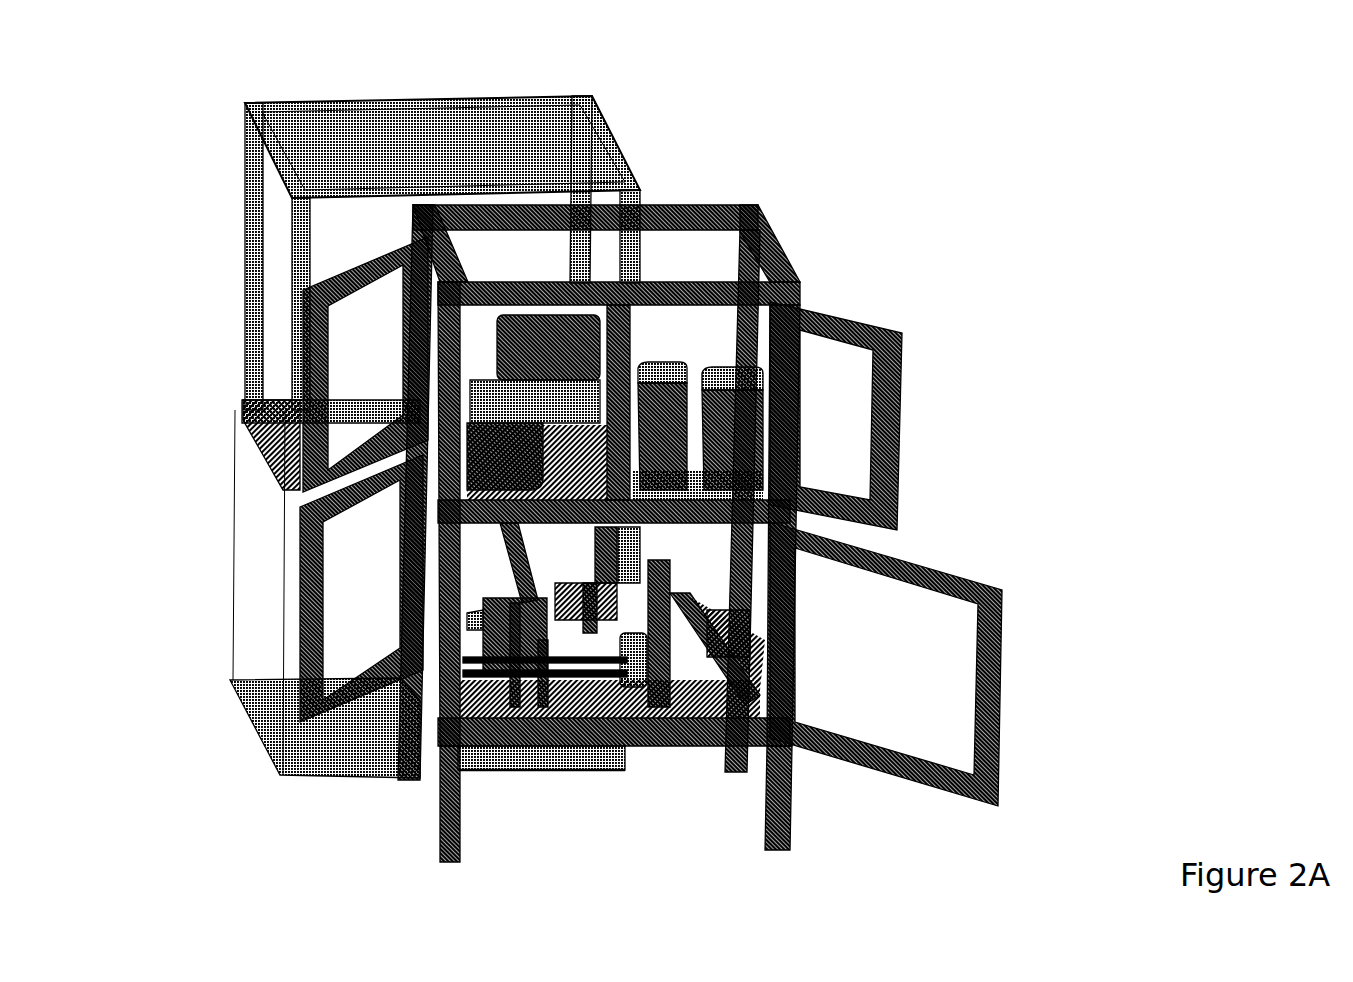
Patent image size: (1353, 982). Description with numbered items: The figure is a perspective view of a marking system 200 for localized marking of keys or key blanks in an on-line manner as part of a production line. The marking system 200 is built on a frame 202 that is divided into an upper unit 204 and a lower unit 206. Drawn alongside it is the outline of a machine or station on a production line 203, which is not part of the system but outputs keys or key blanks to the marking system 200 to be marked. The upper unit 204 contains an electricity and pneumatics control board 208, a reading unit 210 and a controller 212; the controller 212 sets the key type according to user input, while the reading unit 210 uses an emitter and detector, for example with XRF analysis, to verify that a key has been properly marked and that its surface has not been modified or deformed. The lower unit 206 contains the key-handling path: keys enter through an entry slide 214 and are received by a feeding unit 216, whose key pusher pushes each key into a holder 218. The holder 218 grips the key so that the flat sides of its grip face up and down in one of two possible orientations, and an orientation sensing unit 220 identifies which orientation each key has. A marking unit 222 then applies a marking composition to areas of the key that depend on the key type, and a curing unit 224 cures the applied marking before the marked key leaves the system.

The marking system 200 is at (217, 80).
The frame 202 is at (708, 205).
The production line machine or station 203 is at (310, 130).
The upper unit 204 is at (828, 246).
The lower unit 206 is at (935, 545).
The electricity and pneumatics control board 208 is at (536, 320).
The reading unit 210 is at (757, 350).
The controller 212 is at (448, 427).
The entry slide 214 is at (512, 574).
The feeding unit 216 is at (443, 828).
The holder 218 is at (437, 633).
The orientation sensing unit 220 is at (561, 694).
The marking unit 222 is at (588, 645).
The curing unit 224 is at (787, 812).